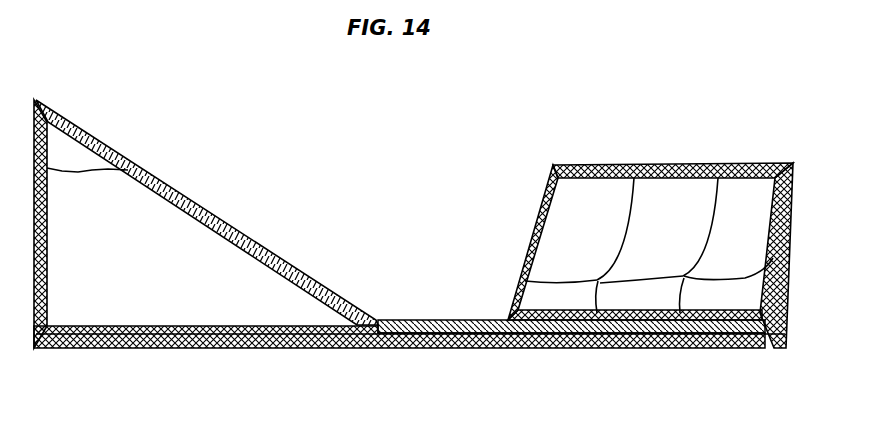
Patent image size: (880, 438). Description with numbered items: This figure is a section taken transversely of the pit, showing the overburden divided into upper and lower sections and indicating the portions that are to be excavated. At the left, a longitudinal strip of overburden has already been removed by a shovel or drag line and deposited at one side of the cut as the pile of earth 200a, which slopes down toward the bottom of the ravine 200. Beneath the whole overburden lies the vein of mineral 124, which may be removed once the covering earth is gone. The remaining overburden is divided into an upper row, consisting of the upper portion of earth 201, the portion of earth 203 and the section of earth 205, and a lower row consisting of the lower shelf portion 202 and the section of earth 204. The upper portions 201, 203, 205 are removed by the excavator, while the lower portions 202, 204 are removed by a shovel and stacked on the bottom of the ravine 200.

The pile of earth 200a is at (62, 137).
The ravine 200 is at (414, 328).
The vein of mineral 124 is at (452, 330).
The upper portion of earth 201 is at (581, 205).
The portion of earth 203 is at (665, 215).
The section of earth 205 is at (744, 192).
The lower shelf portion 202 is at (556, 297).
The section of earth 204 is at (640, 297).